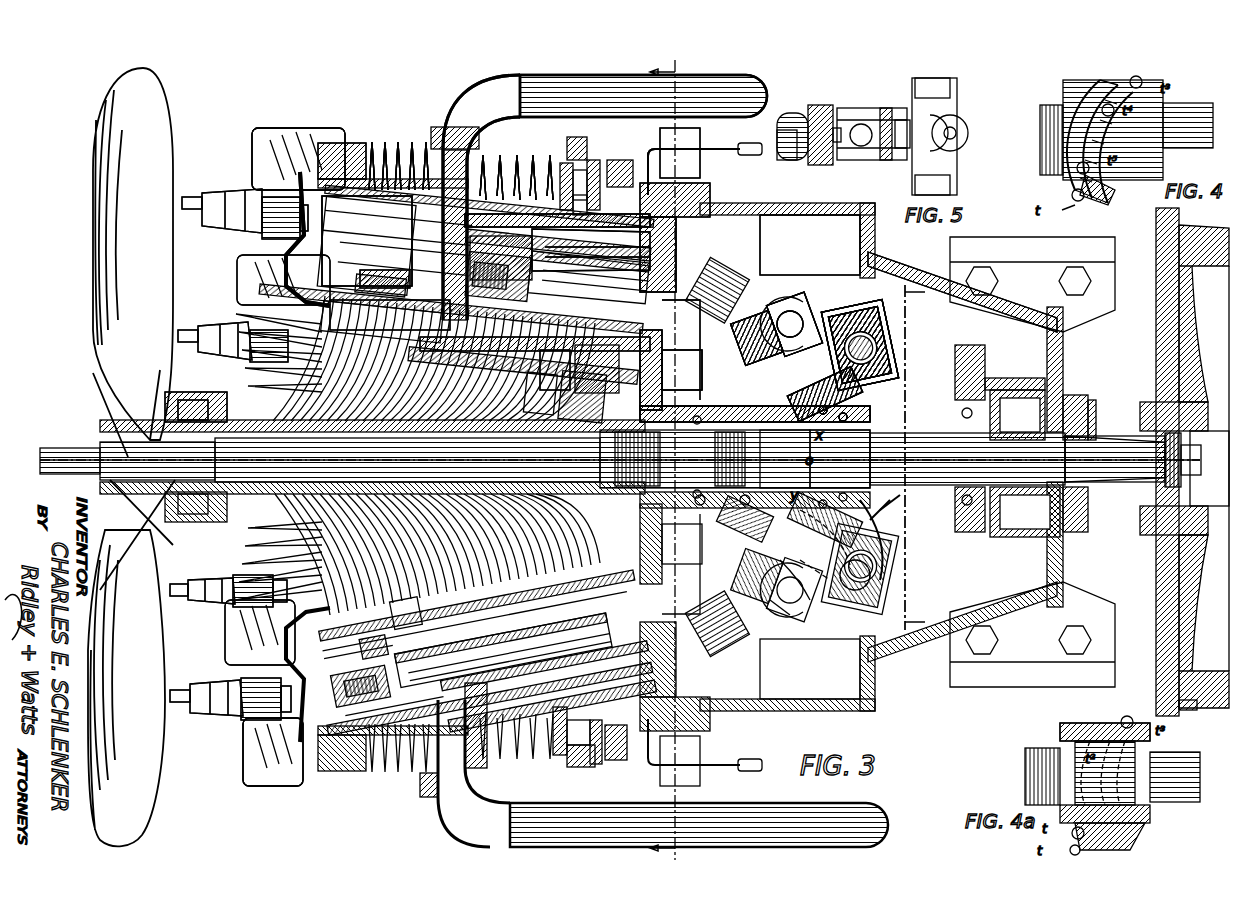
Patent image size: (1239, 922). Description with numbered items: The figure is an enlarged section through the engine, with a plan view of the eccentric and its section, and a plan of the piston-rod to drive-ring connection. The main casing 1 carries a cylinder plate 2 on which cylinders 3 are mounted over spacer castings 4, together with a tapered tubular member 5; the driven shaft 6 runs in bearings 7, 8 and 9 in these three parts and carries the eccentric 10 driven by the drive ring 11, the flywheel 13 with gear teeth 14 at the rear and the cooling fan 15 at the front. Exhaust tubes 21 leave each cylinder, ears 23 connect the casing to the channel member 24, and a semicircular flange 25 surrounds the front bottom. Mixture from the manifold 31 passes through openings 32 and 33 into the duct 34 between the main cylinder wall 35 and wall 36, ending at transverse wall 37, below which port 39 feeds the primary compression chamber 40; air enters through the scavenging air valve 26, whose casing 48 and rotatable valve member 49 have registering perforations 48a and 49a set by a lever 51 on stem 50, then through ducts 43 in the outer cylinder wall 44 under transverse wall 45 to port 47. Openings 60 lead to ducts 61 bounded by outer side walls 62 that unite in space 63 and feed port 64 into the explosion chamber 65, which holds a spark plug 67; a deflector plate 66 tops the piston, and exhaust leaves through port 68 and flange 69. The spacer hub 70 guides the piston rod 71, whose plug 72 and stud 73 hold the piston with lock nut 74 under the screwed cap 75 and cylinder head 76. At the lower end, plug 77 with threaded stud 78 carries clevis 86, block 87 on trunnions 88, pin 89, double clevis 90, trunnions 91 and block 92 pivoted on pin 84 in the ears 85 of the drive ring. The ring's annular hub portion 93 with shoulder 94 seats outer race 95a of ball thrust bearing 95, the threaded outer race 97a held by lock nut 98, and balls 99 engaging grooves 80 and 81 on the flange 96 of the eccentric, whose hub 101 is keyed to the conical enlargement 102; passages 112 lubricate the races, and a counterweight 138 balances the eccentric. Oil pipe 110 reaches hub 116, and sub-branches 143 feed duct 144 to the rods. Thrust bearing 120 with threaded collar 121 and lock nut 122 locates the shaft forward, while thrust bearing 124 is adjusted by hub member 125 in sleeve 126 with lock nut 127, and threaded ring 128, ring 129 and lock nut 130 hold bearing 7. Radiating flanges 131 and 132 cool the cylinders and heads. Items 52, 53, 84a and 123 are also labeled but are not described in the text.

In FIG. 3, the main casing 1 is at (868, 690).
In FIG. 3, the cylinder plate 2 is at (690, 225).
In FIG. 3, the cylinders 3 is at (398, 775).
In FIG. 3, the spacer castings 4 is at (688, 684).
In FIG. 3, the tapered tubular member 5 is at (620, 404).
In FIG. 3, the driven shaft 6 is at (620, 460).
In FIG. 4, the driven shaft 6 is at (1190, 115).
In FIG. 4A, the driven shaft 6 is at (1180, 795).
In FIG. 3, the bearing 7 is at (960, 457).
In FIG. 3, the bearing 8 is at (669, 445).
In FIG. 3, the bearing 9 is at (668, 492).
In FIG. 3, the eccentric 10 is at (900, 563).
In FIG. 4, the eccentric 10 is at (1115, 200).
In FIG. 4A, the eccentric 10 is at (1087, 723).
In FIG. 3, the drive ring 11 is at (810, 582).
In FIG. 3, the flywheel 13 is at (1156, 600).
In FIG. 3, the gear teeth 14 is at (1185, 710).
In FIG. 3, the cooling fan 15 is at (95, 337).
In FIG. 3, the exhaust tubes 21 is at (460, 843).
In FIG. 3, the ears 23 is at (1100, 633).
In FIG. 3, the supporting channel member 24 is at (1000, 690).
In FIG. 3, the semicircular flange 25 is at (700, 775).
In FIG. 3, the air valve 26 is at (566, 163).
In FIG. 3, the combustible mixture manifold 31 is at (665, 365).
In FIG. 3, the openings 32 is at (665, 370).
In FIG. 3, the openings 33 is at (637, 435).
In FIG. 3, the duct 34 is at (578, 438).
In FIG. 3, the main cylinder wall 35 is at (547, 449).
In FIG. 3, the wall 36 is at (538, 436).
In FIG. 3, the transverse wall 37 is at (399, 447).
In FIG. 3, the port 39 is at (535, 471).
In FIG. 3, the primary compression chamber 40 is at (602, 495).
In FIG. 3, the ducts 43 is at (557, 455).
In FIG. 3, the outer cylinder wall 44 is at (517, 155).
In FIG. 3, the transverse wall 45 is at (557, 456).
In FIG. 3, the port 47 is at (557, 440).
In FIG. 3, the casing 48 is at (560, 175).
In FIG. 3, the perforations 48a is at (552, 756).
In FIG. 3, the cylindrical valve member 49 is at (560, 205).
In FIG. 3, the perforations 49a is at (557, 755).
In FIG. 3, the stem 50 is at (567, 145).
In FIG. 3, the lever 51 is at (620, 153).
In FIG. 3, the nut 52 is at (616, 455).
In FIG. 3, the nut 53 is at (620, 756).
In FIG. 3, the openings 60 is at (591, 413).
In FIG. 3, the ducts 61 is at (469, 444).
In FIG. 3, the outer side walls 62 is at (552, 443).
In FIG. 3, the space 63 is at (378, 408).
In FIG. 3, the port 64 is at (395, 408).
In FIG. 3, the explosion chamber 65 is at (367, 241).
In FIG. 3, the deflector plate 66 is at (222, 660).
In FIG. 3, the spark plug 67 is at (205, 720).
In FIG. 3, the port 68 is at (426, 775).
In FIG. 3, the flange 69 is at (487, 765).
In FIG. 3, the central hub 70 is at (535, 470).
In FIG. 3, the piston rod 71 is at (573, 481).
In FIG. 5, the piston rod 71 is at (790, 113).
In FIG. 3, the plug 72 is at (422, 471).
In FIG. 3, the stud 73 is at (330, 785).
In FIG. 3, the lock nut 74 is at (275, 640).
In FIG. 3, the screwed cap 75 is at (345, 502).
In FIG. 3, the cylinder head 76 is at (260, 786).
In FIG. 3, the plug 77 is at (682, 456).
In FIG. 5, the plug 77 is at (787, 158).
In FIG. 3, the threaded stud projection 78 is at (776, 322).
In FIG. 5, the threaded stud projection 78 is at (822, 105).
In FIG. 3, the groove 80 is at (785, 459).
In FIG. 4, the groove 80 is at (1077, 190).
In FIG. 4A, the groove 80 is at (1070, 835).
In FIG. 3, the groove 81 is at (840, 459).
In FIG. 4, the groove 81 is at (1105, 205).
In FIG. 4A, the groove 81 is at (1110, 845).
In FIG. 3, the pin 84 is at (890, 355).
In FIG. 3, the crank block 84a is at (869, 579).
In FIG. 3, the ears 85 is at (884, 372).
In FIG. 5, the ears 85 is at (958, 150).
In FIG. 3, the clevis 86 is at (770, 490).
In FIG. 5, the clevis 86 is at (837, 142).
In FIG. 3, the block 87 is at (747, 438).
In FIG. 5, the block 87 is at (888, 108).
In FIG. 3, the trunnions 88 is at (800, 300).
In FIG. 5, the trunnions 88 is at (860, 108).
In FIG. 3, the pin 89 is at (782, 473).
In FIG. 5, the pin 89 is at (862, 146).
In FIG. 3, the double clevis 90 is at (805, 640).
In FIG. 5, the double clevis 90 is at (905, 148).
In FIG. 3, the trunnions 91 is at (833, 478).
In FIG. 5, the trunnions 91 is at (955, 185).
In FIG. 3, the block 92 is at (892, 340).
In FIG. 5, the block 92 is at (950, 120).
In FIG. 3, the annular hub portion 93 is at (825, 537).
In FIG. 3, the shoulder 94 is at (743, 524).
In FIG. 3, the ball thrust bearing 95 is at (816, 394).
In FIG. 4, the ball thrust bearing 95 is at (1130, 80).
In FIG. 4A, the ball thrust bearing 95 is at (1125, 716).
In FIG. 3, the outer race 95a is at (824, 394).
In FIG. 3, the flange 96 is at (870, 392).
In FIG. 4, the flange 96 is at (1080, 165).
In FIG. 3, the outer race 97a is at (819, 573).
In FIG. 3, the lock nut 98 is at (874, 540).
In FIG. 3, the balls 99 is at (745, 505).
In FIG. 4, the balls 99 is at (1088, 209).
In FIG. 4A, the balls 99 is at (1068, 852).
In FIG. 3, the hub 101 is at (889, 522).
In FIG. 4, the hub 101 is at (1063, 90).
In FIG. 4A, the hub 101 is at (1060, 728).
In FIG. 3, the conical enlargement 102 is at (899, 510).
In FIG. 4A, the conical enlargement 102 is at (1080, 770).
In FIG. 3, the branch pipe 110 is at (197, 392).
In FIG. 3, the passages 112 is at (794, 613).
In FIG. 3, the hub 116 is at (196, 401).
In FIG. 3, the ball-thrust-bearing 120 is at (705, 520).
In FIG. 3, the threaded collar 121 is at (755, 407).
In FIG. 3, the lock nut 122 is at (755, 399).
In FIG. 3, the bearing 123 is at (755, 407).
In FIG. 3, the ball-thrust-bearing 124 is at (970, 515).
In FIG. 3, the adjustable hub member 125 is at (1017, 399).
In FIG. 3, the sleeve 126 is at (1005, 378).
In FIG. 3, the lock nut 127 is at (1075, 395).
In FIG. 3, the threaded ring 128 is at (1075, 532).
In FIG. 3, the ring 129 is at (1108, 407).
In FIG. 3, the lock nut 130 is at (1054, 515).
In FIG. 3, the annular radiating flanges 131 is at (372, 780).
In FIG. 3, the radiating flanges 132 is at (243, 760).
In FIG. 3, the counterweight 138 is at (971, 370).
In FIG. 3, the sub-branches 143 is at (720, 760).
In FIG. 3, the duct 144 is at (693, 457).